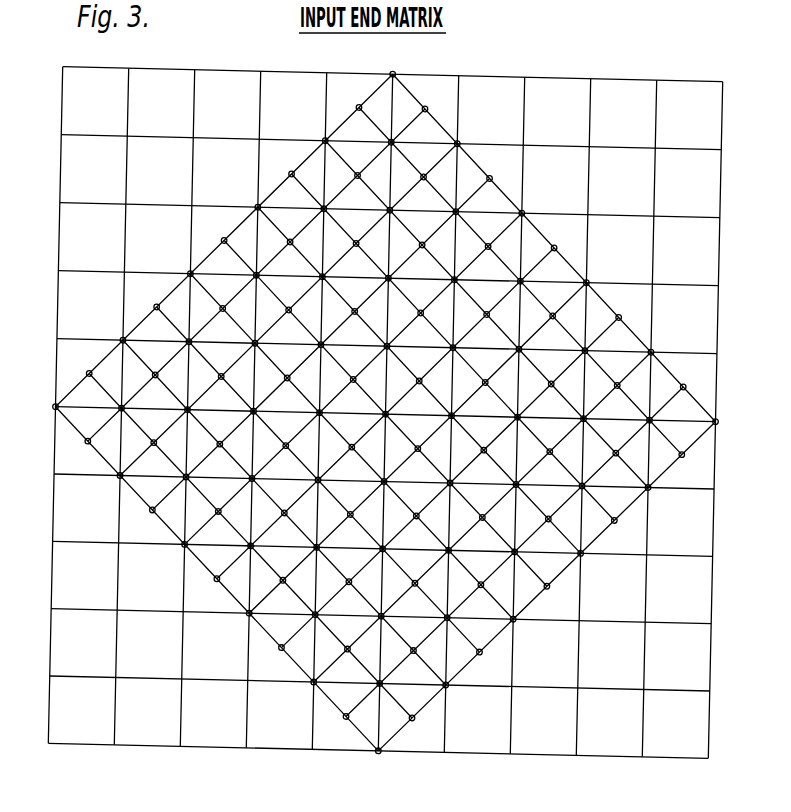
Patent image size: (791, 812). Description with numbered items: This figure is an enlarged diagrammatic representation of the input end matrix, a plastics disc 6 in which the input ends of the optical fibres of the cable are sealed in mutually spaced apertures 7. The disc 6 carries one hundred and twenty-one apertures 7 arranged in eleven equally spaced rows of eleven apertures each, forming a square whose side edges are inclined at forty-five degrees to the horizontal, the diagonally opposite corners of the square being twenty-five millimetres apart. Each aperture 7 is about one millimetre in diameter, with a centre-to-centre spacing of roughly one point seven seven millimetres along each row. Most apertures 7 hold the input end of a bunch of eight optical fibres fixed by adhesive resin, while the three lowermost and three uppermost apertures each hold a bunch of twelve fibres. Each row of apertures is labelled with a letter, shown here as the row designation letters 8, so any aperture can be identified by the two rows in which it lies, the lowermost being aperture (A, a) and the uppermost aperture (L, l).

The plastics disc 6 is at (705, 271).
The apertures 7 is at (188, 341).
The terminal designation letters 8 is at (735, 440).